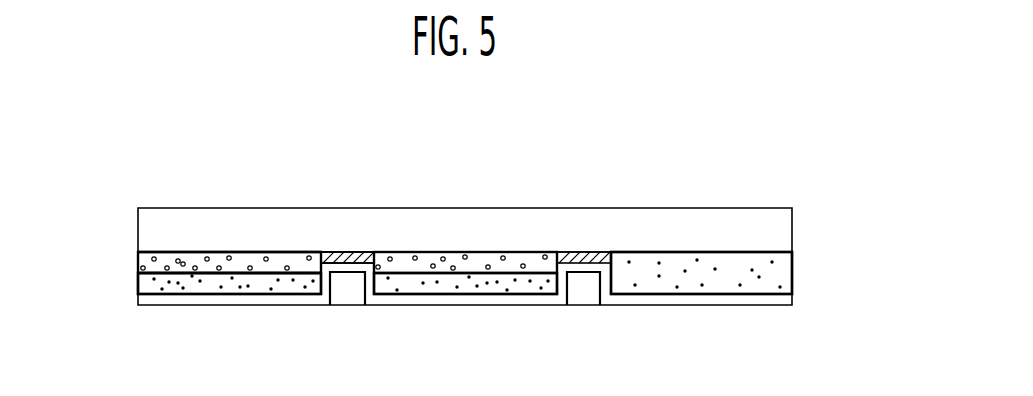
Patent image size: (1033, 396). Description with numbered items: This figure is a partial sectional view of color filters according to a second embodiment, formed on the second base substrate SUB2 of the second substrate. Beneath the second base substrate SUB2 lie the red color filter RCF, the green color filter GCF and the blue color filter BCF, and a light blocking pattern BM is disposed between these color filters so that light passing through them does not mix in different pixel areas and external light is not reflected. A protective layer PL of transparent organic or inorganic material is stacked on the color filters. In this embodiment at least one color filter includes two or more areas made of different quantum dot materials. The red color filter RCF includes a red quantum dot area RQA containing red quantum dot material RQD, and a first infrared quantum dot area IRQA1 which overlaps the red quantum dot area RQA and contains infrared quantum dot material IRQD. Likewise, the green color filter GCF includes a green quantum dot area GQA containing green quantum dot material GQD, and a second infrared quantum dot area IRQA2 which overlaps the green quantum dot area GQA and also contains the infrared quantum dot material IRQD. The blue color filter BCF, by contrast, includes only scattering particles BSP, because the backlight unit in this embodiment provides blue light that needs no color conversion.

The second base substrate SUB2 is at (787, 231).
The protective layer PL is at (787, 297).
The red color filter RCF is at (189, 240).
The green color filter GCF is at (423, 240).
The blue color filter BCF is at (659, 240).
The light blocking pattern BM is at (347, 252).
The first infrared quantum dot area IRQA1 is at (311, 311).
The red quantum dot area RQA is at (203, 322).
The red quantum dot material RQD is at (221, 288).
The infrared quantum dot material IRQD is at (266, 262).
The second infrared quantum dot area IRQA2 is at (363, 264).
The green quantum dot area GQA is at (456, 334).
The green quantum dot material GQD is at (457, 289).
The scattering particles BSP is at (676, 290).